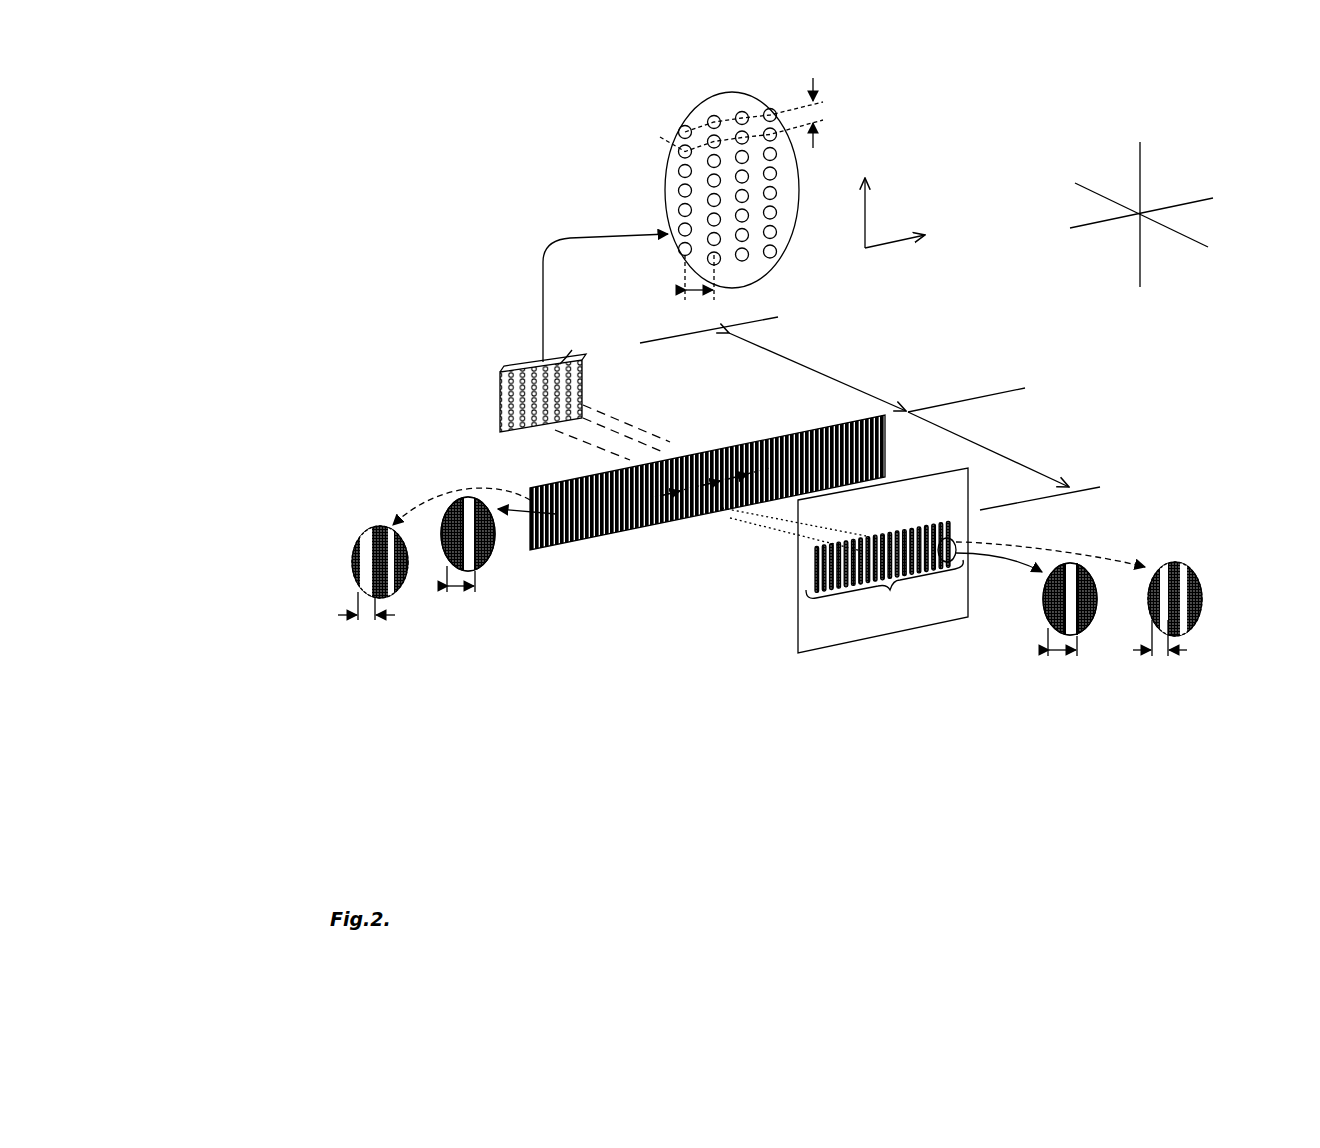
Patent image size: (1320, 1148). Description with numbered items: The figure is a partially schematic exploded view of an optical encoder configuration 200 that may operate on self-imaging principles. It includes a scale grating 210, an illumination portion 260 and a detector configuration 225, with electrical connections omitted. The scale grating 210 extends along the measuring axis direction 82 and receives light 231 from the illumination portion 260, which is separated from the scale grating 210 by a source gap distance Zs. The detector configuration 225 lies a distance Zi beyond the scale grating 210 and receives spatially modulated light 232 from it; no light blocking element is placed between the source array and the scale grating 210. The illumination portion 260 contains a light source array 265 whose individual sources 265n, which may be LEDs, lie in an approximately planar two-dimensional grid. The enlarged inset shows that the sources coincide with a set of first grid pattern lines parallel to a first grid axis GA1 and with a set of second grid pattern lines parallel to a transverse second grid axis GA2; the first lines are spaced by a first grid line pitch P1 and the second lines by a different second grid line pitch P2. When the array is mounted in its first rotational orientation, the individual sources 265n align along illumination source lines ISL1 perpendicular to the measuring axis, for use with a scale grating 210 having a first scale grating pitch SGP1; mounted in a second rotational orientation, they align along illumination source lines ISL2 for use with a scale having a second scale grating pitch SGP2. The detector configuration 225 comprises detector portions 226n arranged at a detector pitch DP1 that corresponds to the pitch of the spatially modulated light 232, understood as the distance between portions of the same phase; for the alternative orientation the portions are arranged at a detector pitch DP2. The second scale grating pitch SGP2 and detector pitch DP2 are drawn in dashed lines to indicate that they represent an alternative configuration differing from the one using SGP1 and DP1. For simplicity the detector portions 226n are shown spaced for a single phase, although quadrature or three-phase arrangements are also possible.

The optical encoder configuration 200 is at (1159, 351).
The scale grating 210 is at (768, 437).
The detector configuration 225 is at (830, 652).
The detector portions 226n is at (887, 590).
The light 231 is at (562, 442).
The spatially modulated light 232 is at (749, 538).
The illumination portion 260 is at (498, 392).
The light source array 265 is at (458, 410).
The individual sources 265n is at (579, 345).
The measuring axis direction 82 is at (1173, 200).
The illumination source lines ISL1 is at (703, 108).
The illumination source lines ISL2 is at (666, 150).
The first grid line pitch P1 is at (679, 291).
The second grid line pitch P2 is at (810, 92).
The first grid axis GA1 is at (865, 198).
The second grid axis GA2 is at (921, 238).
The source gap distance Zs is at (800, 360).
The distance Zi is at (977, 445).
The first scale grating pitch SGP1 is at (463, 590).
The second scale grating pitch SGP2 is at (343, 618).
The detector pitch DP1 is at (1064, 655).
The detector pitch DP2 is at (1138, 652).